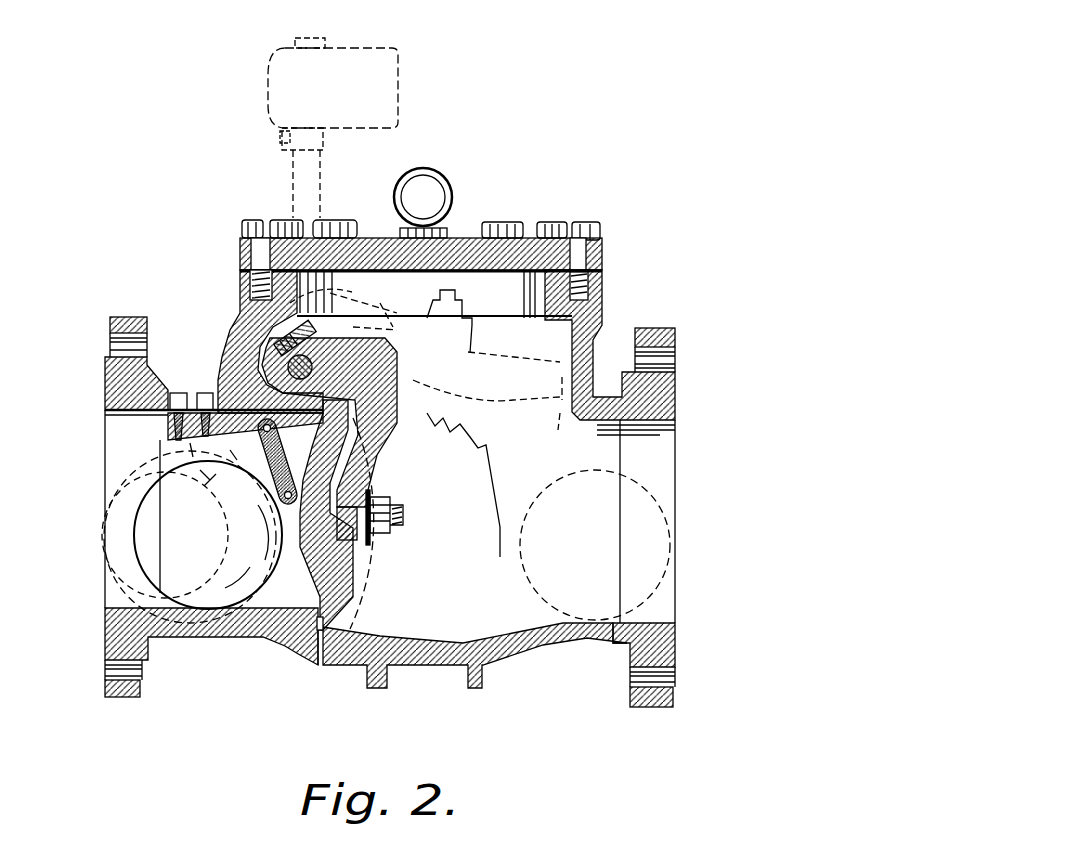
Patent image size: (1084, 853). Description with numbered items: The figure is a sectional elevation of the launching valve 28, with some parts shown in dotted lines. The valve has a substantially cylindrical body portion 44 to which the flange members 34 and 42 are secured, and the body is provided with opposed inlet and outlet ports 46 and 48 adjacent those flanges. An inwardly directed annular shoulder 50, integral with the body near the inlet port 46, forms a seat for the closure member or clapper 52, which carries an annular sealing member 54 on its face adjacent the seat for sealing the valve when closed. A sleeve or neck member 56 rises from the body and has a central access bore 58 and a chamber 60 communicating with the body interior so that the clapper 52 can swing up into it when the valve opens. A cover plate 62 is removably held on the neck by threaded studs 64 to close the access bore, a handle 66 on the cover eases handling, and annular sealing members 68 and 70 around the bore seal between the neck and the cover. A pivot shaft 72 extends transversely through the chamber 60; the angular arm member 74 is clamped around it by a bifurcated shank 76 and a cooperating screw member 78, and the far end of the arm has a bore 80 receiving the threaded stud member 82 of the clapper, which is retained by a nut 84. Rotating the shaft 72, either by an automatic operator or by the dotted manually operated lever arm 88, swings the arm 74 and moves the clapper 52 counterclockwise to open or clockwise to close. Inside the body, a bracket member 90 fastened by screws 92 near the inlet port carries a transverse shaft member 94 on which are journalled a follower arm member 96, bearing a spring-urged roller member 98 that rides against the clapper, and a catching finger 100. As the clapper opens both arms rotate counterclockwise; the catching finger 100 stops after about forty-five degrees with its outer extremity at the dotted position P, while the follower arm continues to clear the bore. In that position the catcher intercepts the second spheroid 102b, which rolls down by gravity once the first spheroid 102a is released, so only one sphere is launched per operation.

The launching valve 28 is at (440, 664).
The flange member 34 is at (141, 688).
The flange member 42 is at (630, 703).
The body portion 44 is at (545, 646).
The inlet port 46 is at (213, 636).
The outlet port 48 is at (597, 402).
The annular shoulder 50 is at (318, 640).
The closure member 52 is at (355, 592).
The annular sealing member 54 is at (318, 612).
The sleeve 56 is at (603, 292).
The central access bore 58 is at (524, 268).
The chamber 60 is at (548, 337).
The cover plate 62 is at (465, 238).
The threaded studs 64 is at (330, 219).
The handle 66 is at (440, 180).
The annular sealing member 68 is at (280, 219).
The annular sealing member 70 is at (252, 219).
The pivot shaft 72 is at (287, 366).
The angular arm member 74 is at (393, 360).
The bifurcated shank 76 is at (325, 290).
The screw member 78 is at (305, 322).
The bore 80 is at (375, 535).
The threaded stud member 82 is at (372, 495).
The nut 84 is at (392, 503).
The lever arm 88 is at (330, 60).
The bracket member 90 is at (168, 424).
The screws 92 is at (205, 392).
The shaft member 94 is at (280, 427).
The follower arm member 96 is at (275, 482).
The roller member 98 is at (270, 505).
The catching finger 100 is at (169, 518).
The position P is at (208, 481).
The first spheroid 102a is at (655, 540).
The second spheroid 102b is at (118, 580).